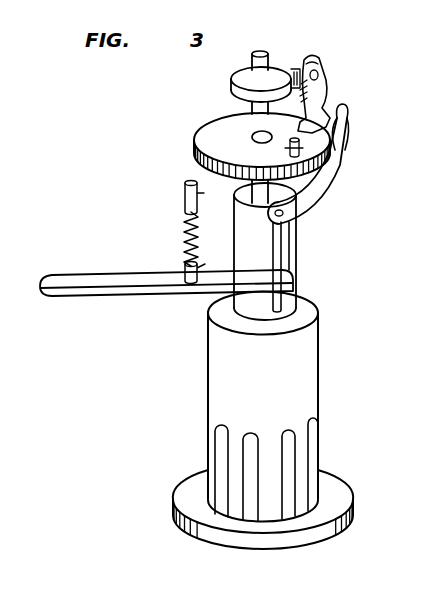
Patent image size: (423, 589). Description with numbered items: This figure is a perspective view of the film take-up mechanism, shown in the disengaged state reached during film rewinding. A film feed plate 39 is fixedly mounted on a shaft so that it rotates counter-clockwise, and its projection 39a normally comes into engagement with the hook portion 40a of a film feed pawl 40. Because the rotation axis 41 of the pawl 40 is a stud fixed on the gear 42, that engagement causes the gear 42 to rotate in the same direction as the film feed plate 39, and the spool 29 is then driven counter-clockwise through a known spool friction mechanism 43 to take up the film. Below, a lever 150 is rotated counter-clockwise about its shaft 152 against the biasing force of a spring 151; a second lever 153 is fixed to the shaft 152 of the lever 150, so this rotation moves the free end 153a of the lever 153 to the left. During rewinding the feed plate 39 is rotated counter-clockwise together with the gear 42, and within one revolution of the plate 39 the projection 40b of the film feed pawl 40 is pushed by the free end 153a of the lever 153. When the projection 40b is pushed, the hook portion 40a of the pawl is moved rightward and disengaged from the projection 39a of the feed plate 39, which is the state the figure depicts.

The spool 29 is at (300, 386).
The film feed plate 39 is at (230, 81).
The projection 39a is at (296, 70).
The film feed pawl 40 is at (324, 102).
The hook portion 40a is at (307, 64).
The projection 40b is at (343, 149).
The rotation axis 41 is at (323, 83).
The gear 42 is at (197, 136).
The spool friction mechanism 43 is at (290, 236).
The lever 150 is at (142, 284).
The spring 151 is at (184, 228).
The shaft 152 is at (283, 262).
The lever 153 is at (324, 186).
The free end 153a is at (345, 122).